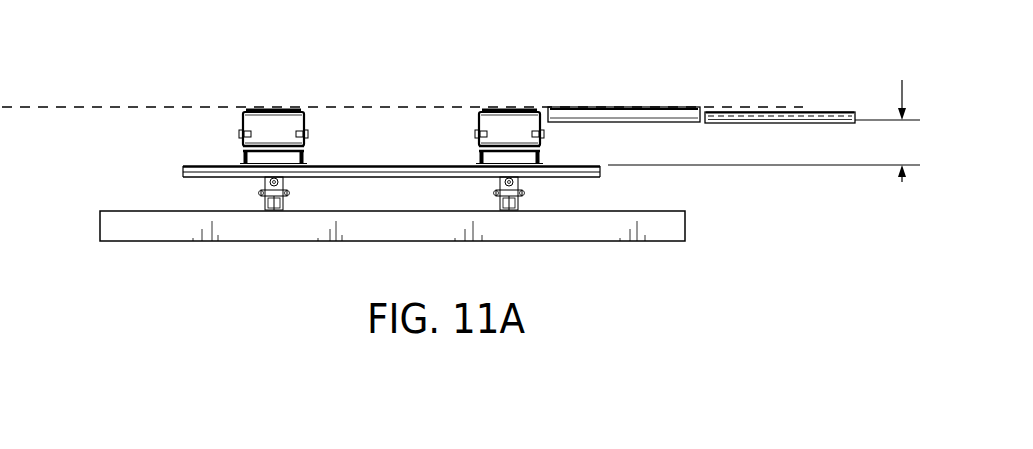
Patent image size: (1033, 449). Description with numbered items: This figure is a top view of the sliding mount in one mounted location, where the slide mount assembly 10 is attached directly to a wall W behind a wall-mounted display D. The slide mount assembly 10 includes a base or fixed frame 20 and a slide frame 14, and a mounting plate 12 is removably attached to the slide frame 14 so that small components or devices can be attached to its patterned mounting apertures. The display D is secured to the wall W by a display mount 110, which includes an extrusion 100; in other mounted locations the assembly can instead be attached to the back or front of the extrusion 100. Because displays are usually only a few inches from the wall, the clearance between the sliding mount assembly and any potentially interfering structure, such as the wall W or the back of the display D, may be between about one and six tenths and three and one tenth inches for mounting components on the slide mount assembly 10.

The wall W is at (88, 107).
The extrusion 100 is at (193, 167).
The display mount 110 is at (287, 160).
The fixed frame 20 is at (606, 98).
The mounting plate 12 is at (833, 124).
The slide frame 14 is at (826, 112).
The slide mount assembly 10 is at (707, 147).
The display D is at (151, 228).